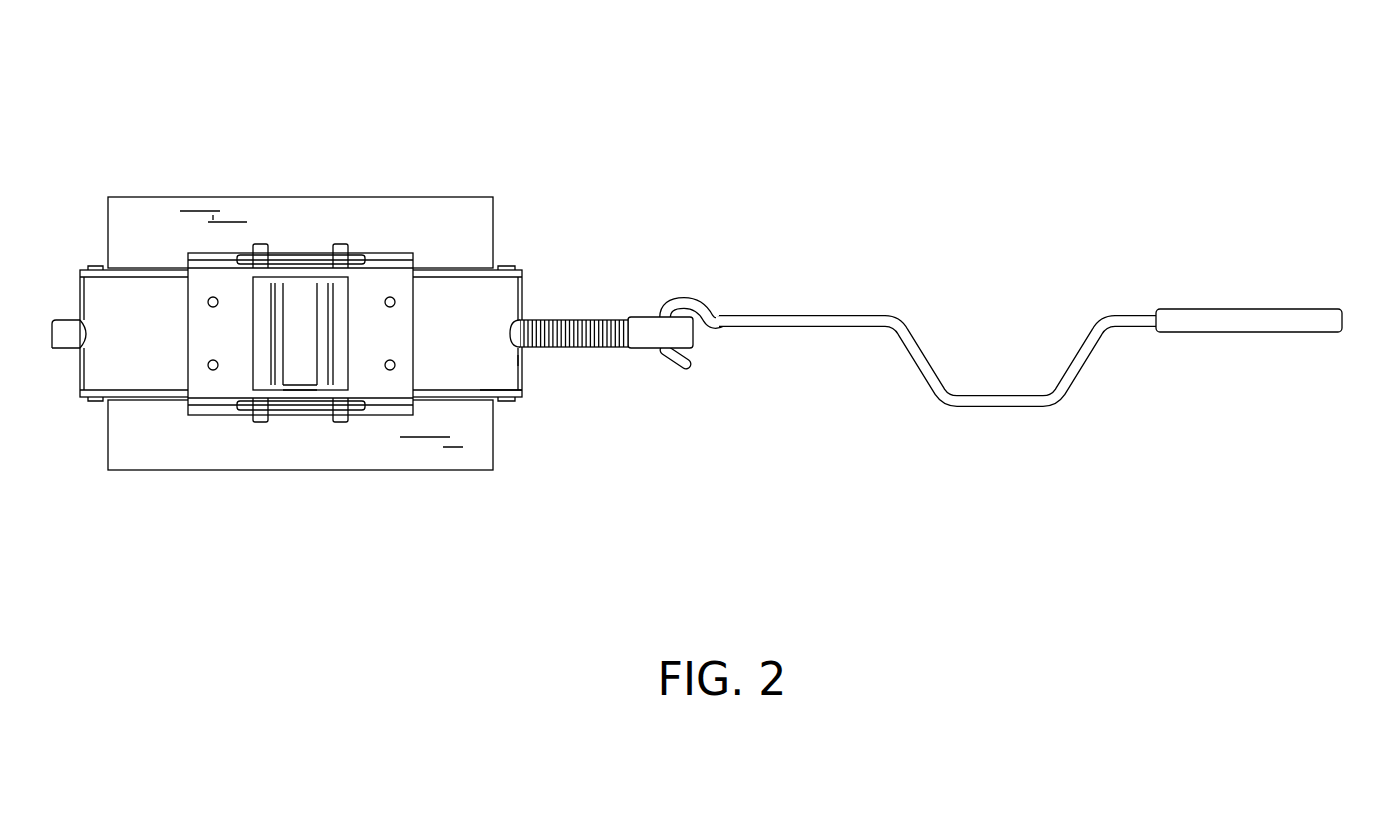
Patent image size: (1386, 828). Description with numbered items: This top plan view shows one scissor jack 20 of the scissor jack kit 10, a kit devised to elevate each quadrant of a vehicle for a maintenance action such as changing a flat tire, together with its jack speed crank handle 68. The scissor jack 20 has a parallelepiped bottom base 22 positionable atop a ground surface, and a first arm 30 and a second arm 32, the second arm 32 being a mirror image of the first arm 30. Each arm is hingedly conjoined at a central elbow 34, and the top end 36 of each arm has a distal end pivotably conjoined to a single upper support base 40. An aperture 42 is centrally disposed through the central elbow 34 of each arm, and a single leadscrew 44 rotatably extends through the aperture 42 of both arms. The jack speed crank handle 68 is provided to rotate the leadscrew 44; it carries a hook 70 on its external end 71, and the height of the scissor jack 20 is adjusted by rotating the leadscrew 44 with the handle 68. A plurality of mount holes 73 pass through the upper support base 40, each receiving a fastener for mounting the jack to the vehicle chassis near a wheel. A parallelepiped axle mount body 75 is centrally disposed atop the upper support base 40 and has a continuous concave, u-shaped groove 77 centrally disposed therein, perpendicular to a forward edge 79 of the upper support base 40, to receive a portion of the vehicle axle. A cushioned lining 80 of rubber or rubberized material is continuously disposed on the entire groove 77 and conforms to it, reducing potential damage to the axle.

The scissor jack kit 10 is at (624, 150).
The scissor jack 20 is at (492, 197).
The parallelepiped bottom base 22 is at (492, 470).
The first arm 30 is at (522, 270).
The second arm 32 is at (80, 268).
The central elbow 34 is at (522, 360).
The top end 36 is at (497, 377).
The upper support base 40 is at (413, 262).
The aperture 42 is at (514, 337).
The leadscrew 44 is at (618, 343).
The jack speed crank handle 68 is at (1337, 308).
The hook 70 is at (672, 305).
The external end 71 is at (717, 310).
The mount holes 73 is at (388, 292).
The parallelepiped axle mount body 75 is at (350, 288).
The u-shaped groove 77 is at (271, 308).
The forward edge 79 is at (307, 397).
The cushioned lining 80 is at (293, 380).